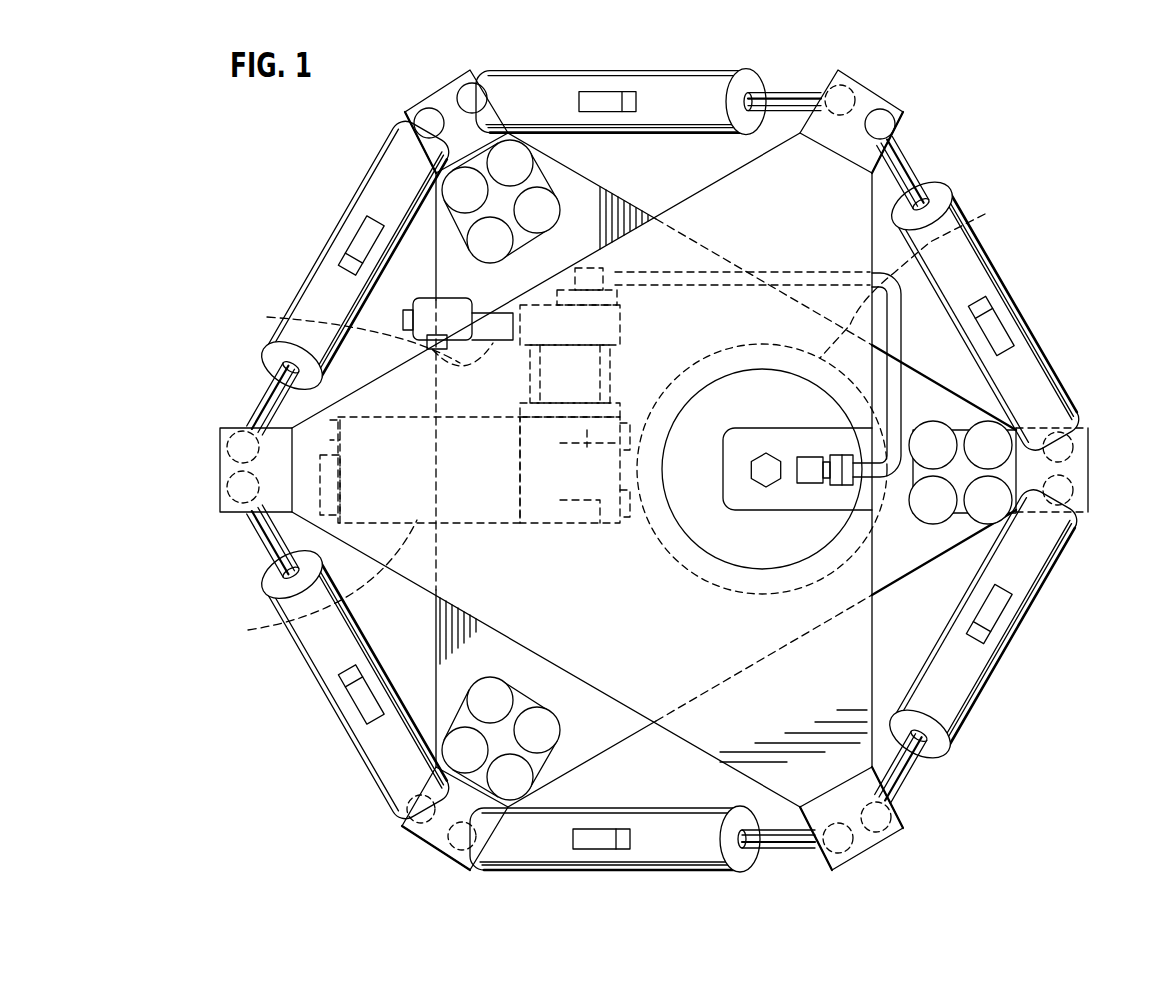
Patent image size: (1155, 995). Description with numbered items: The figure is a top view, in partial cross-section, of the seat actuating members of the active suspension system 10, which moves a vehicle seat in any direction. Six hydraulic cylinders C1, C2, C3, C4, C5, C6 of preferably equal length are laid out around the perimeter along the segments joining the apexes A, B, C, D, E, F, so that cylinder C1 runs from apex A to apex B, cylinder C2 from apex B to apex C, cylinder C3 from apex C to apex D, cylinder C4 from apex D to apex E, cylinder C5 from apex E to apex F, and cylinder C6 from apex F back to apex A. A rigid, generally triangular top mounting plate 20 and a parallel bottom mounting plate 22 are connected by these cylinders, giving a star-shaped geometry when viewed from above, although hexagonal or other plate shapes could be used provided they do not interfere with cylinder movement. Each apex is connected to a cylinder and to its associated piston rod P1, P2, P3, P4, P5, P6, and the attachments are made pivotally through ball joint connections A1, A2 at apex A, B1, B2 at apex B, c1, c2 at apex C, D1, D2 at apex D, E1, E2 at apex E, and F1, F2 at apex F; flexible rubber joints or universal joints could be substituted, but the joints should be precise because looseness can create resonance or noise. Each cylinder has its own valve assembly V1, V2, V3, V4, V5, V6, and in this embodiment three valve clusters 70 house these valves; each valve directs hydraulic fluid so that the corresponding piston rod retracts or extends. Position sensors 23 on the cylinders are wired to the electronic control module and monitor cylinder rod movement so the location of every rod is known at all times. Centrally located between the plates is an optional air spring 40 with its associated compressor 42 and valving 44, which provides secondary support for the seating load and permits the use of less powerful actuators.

The active suspension system 10 is at (262, 170).
The top mounting plate 20 is at (870, 673).
The bottom mounting plate 22 is at (960, 398).
The position sensor 23 is at (360, 236).
The air spring 40 is at (978, 215).
The compressor 42 is at (253, 628).
The valving 44 is at (277, 311).
The valve cluster 70 is at (548, 186).
The apex A is at (220, 473).
The ball joint connection A1 is at (230, 527).
The ball joint connection A2 is at (220, 437).
The apex B is at (438, 92).
The ball joint connection B1 is at (418, 117).
The ball joint connection B2 is at (472, 83).
The apex C is at (873, 87).
The ball joint connection c1 is at (843, 87).
The ball joint connection c2 is at (903, 104).
The apex D is at (1090, 455).
The ball joint connection D1 is at (1077, 433).
The ball joint connection D2 is at (1087, 498).
The apex E is at (903, 830).
The ball joint connection E1 is at (897, 805).
The ball joint connection E2 is at (882, 860).
The apex F is at (398, 828).
The ball joint connection F1 is at (420, 840).
The ball joint connection F2 is at (398, 805).
The hydraulic cylinder C1 is at (313, 285).
The hydraulic cylinder C2 is at (720, 80).
The hydraulic cylinder C3 is at (1007, 280).
The hydraulic cylinder C4 is at (1037, 577).
The hydraulic cylinder C5 is at (470, 850).
The hydraulic cylinder C6 is at (313, 652).
The piston rod P1 is at (268, 393).
The piston rod P2 is at (790, 92).
The piston rod P3 is at (913, 157).
The piston rod P4 is at (910, 763).
The piston rod P5 is at (795, 848).
The piston rod P6 is at (267, 553).
The valve assembly V1 is at (487, 176).
The valve assembly V2 is at (513, 225).
The valve assembly V3 is at (988, 472).
The valve assembly V4 is at (933, 472).
The valve assembly V5 is at (487, 763).
The valve assembly V6 is at (513, 715).